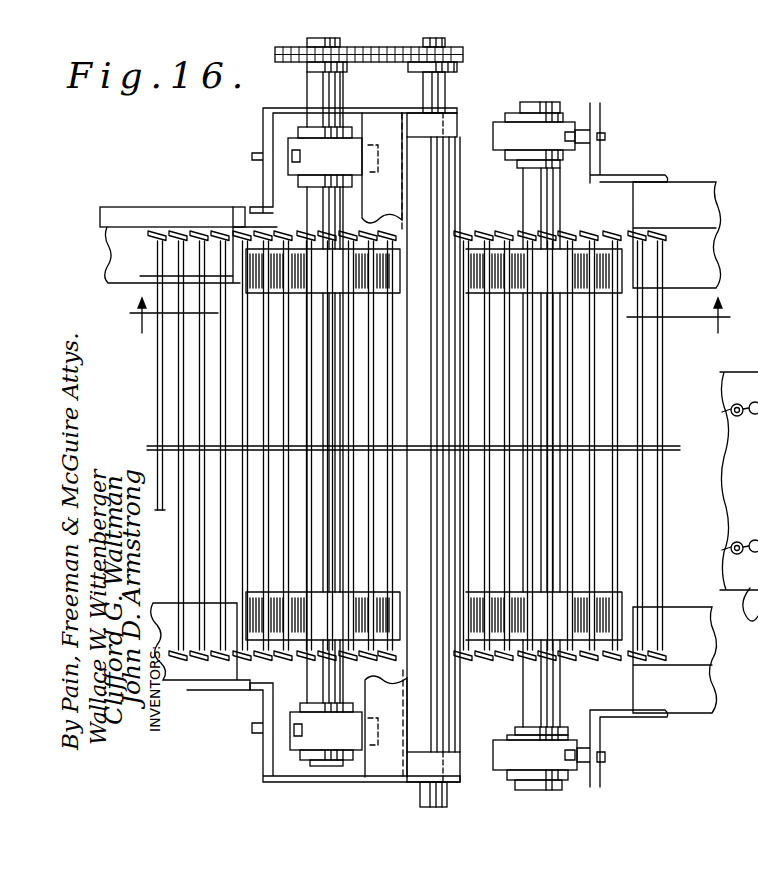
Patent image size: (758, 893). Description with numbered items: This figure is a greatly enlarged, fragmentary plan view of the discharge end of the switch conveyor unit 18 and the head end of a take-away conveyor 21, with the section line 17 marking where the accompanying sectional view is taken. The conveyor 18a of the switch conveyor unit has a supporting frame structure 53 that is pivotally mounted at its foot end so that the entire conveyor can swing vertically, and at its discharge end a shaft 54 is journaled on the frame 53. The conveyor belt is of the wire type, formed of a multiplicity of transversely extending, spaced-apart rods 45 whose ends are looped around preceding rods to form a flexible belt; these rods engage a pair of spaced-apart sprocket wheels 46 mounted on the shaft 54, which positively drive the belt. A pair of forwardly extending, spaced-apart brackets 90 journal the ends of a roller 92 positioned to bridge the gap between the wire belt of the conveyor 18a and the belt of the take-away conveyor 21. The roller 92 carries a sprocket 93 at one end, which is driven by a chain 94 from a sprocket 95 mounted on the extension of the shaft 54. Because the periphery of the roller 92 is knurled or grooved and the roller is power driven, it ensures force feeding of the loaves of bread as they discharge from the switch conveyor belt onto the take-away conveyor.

The section line 17 is at (425, 315).
The switch conveyor unit 18 is at (145, 205).
The conveyor 18a is at (118, 268).
The take-away conveyor 21 is at (693, 248).
The rods 45 is at (170, 371).
The sprocket wheels 46 is at (326, 265).
The supporting frame structure 53 is at (154, 211).
The shaft 54 is at (315, 88).
The brackets 90 is at (360, 112).
The roller 92 is at (447, 160).
The sprocket 93 is at (454, 65).
The chain 94 is at (385, 42).
The sprocket 95 is at (308, 70).